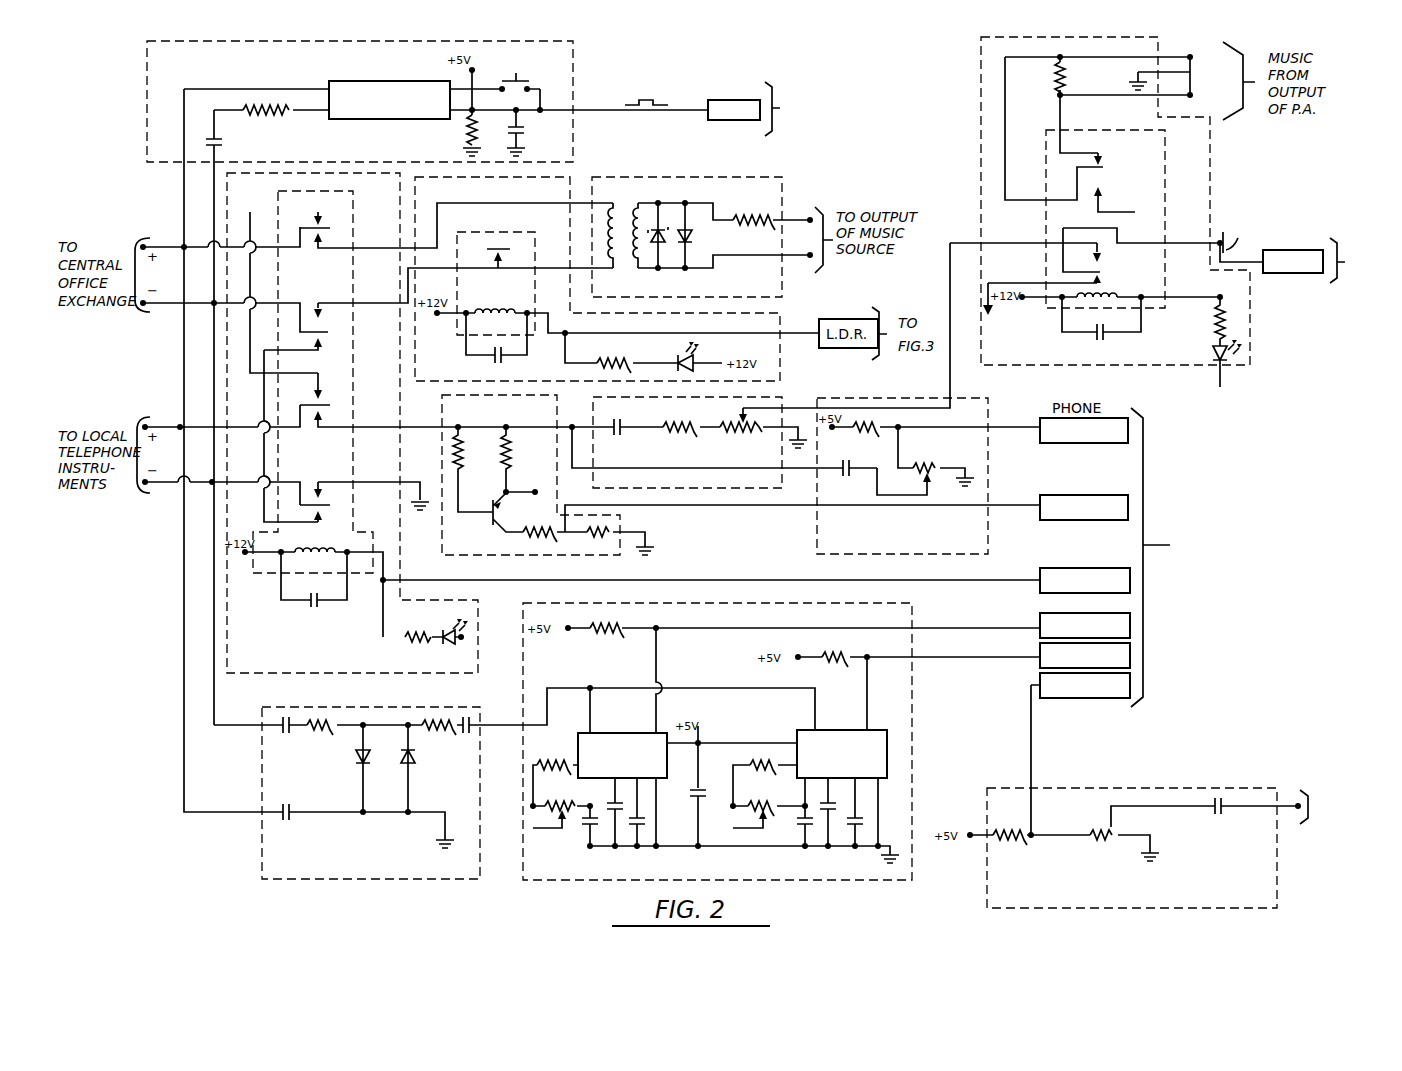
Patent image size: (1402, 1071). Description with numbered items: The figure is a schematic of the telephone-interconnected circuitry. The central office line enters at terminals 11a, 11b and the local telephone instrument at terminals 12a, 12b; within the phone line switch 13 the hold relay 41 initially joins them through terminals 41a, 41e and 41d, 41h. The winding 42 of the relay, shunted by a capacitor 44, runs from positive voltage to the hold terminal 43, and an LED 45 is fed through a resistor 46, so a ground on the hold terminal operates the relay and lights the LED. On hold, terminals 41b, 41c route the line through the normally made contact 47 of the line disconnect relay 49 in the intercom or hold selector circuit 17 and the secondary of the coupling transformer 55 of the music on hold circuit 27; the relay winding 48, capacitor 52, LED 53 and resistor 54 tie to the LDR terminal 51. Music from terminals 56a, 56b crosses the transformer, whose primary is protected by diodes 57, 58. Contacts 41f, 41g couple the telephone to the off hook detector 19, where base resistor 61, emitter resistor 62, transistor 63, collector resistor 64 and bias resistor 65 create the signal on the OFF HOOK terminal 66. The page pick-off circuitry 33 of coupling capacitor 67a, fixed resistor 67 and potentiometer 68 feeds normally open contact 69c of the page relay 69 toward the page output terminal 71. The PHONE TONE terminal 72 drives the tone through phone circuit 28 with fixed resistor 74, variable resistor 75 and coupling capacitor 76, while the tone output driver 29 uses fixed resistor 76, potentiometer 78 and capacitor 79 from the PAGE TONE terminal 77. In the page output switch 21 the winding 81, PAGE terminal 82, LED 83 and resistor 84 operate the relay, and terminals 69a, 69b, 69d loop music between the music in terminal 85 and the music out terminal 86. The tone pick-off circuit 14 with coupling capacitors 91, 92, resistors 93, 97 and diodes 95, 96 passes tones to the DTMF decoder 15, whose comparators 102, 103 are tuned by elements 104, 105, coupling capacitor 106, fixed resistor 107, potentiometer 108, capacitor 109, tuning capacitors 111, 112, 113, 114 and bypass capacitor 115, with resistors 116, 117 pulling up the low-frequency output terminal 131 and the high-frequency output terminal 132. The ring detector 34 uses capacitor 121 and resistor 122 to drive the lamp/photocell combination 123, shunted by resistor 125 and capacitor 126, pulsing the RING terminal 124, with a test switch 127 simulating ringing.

The central office terminal 11a is at (143, 240).
The central office terminal 11b is at (142, 314).
The telephone instrument terminal 12a is at (147, 424).
The telephone instrument terminal 12b is at (146, 486).
The phone line switch 13 is at (268, 673).
The tone pick-off circuit 14 is at (262, 868).
The DTMF decoder 15 is at (912, 607).
The intercom or hold selector circuit 17 is at (560, 178).
The off hook detector 19 is at (442, 406).
The page output switch 21 is at (1122, 37).
The music on hold circuit 27 is at (748, 177).
The tone through phone circuit 28 is at (988, 545).
The tone output driver 29 is at (1107, 788).
The page pick-off circuitry 33 is at (777, 398).
The ring detector 34 is at (340, 41).
The hold relay 41 is at (336, 191).
The hold relay terminal 41a is at (325, 217).
The hold relay terminal 41b is at (316, 244).
The hold relay terminal 41c is at (314, 310).
The hold relay terminal 41d is at (320, 342).
The hold relay terminal 41e is at (318, 404).
The hold relay contact 41f is at (317, 418).
The hold relay contact 41g is at (316, 493).
The hold relay terminal 41h is at (320, 516).
The winding 42 is at (315, 561).
The hold terminal 43 is at (1084, 568).
The capacitor 44 is at (318, 607).
The LED 45 is at (446, 644).
The resistor 46 is at (418, 633).
The normally made contact 47 is at (498, 250).
The winding 48 is at (491, 305).
The line disconnect relay 49 is at (535, 258).
The LDR terminal 51 is at (567, 333).
The capacitor 52 is at (508, 357).
The LED 53 is at (694, 354).
The resistor 54 is at (607, 363).
The coupling transformer 55 is at (623, 262).
The music source terminal 56a is at (814, 206).
The music source terminal 56b is at (814, 269).
The diode 57 is at (661, 222).
The diode 58 is at (688, 239).
The base resistor 61 is at (473, 469).
The emitter resistor 62 is at (529, 461).
The transistor 63 is at (496, 521).
The collector resistor 64 is at (533, 533).
The bias resistor 65 is at (620, 541).
The OFF HOOK terminal 66 is at (1079, 498).
The fixed resistor 67 is at (692, 420).
The coupling capacitor 67a is at (610, 417).
The potentiometer 68 is at (732, 420).
The page relay 69 is at (1167, 163).
The page relay terminal 69a is at (1102, 160).
The page relay terminal 69b is at (1098, 190).
The normally open contact 69c is at (1105, 261).
The page relay terminal 69d is at (1105, 278).
The page output terminal 71 is at (1220, 238).
The PHONE TONE terminal 72 is at (1095, 443).
The fixed resistor 74 is at (862, 437).
The variable resistor 75 is at (926, 463).
The coupling capacitor / fixed resistor 76 is at (844, 478).
The PAGE TONE terminal 77 is at (1130, 706).
The potentiometer 78 is at (1101, 841).
The capacitor 79 is at (1216, 792).
The winding 81 is at (1084, 304).
The PAGE terminal 82 is at (1288, 275).
The LED 83 is at (1236, 352).
The resistor 84 is at (1215, 339).
The music in terminal 85 is at (1194, 48).
The music out terminal 86 is at (1200, 96).
The coupling capacitor 91 is at (295, 736).
The coupling capacitor 92 is at (292, 801).
The resistor 93 is at (313, 719).
The diode 95 is at (358, 758).
The diode 96 is at (416, 766).
The resistor 97 is at (429, 721).
The oscillator/frequency comparator 102 is at (640, 734).
The oscillator/frequency comparator 103 is at (884, 734).
The resistor 104 is at (555, 760).
The potentiometer 105 is at (562, 802).
The coupling capacitor 106 is at (580, 832).
The fixed resistor 107 is at (763, 762).
The potentiometer 108 is at (778, 813).
The capacitor 109 is at (810, 848).
The tuning capacitor 111 is at (608, 812).
The tuning capacitor 112 is at (638, 812).
The capacitor 113 is at (841, 846).
The capacitor 114 is at (870, 848).
The bypass capacitor 115 is at (686, 796).
The resistor 116 is at (603, 627).
The resistor 117 is at (831, 655).
The capacitor 121 is at (224, 143).
The resistor 122 is at (266, 113).
The lamp/photocell combination 123 is at (352, 81).
The RING terminal 124 is at (731, 100).
The shunt resistor 125 is at (472, 123).
The shunt capacitor 126 is at (526, 125).
The test switch 127 is at (503, 79).
The 941 terminal 131 is at (1102, 613).
The 1209 terminal 132 is at (1040, 648).